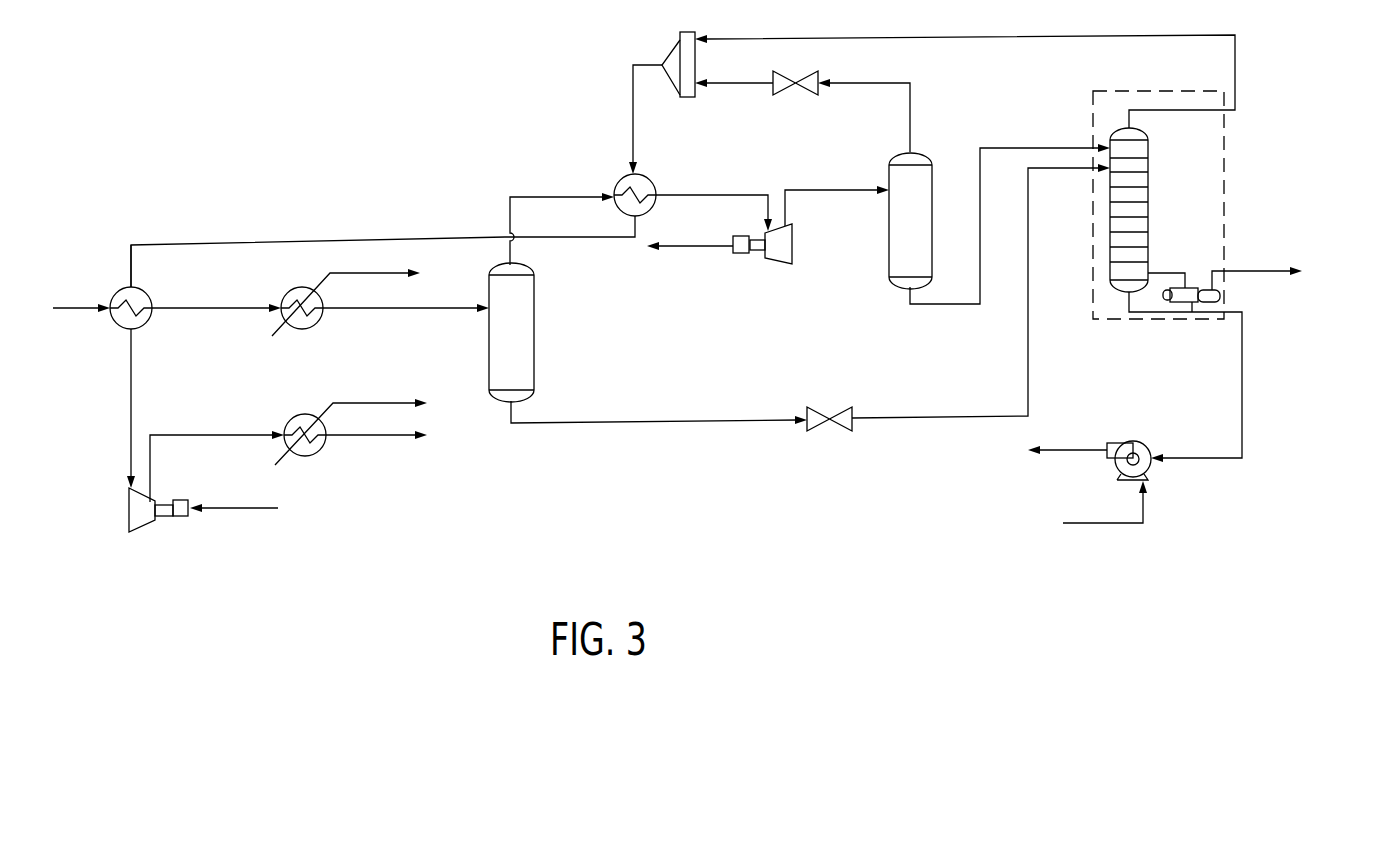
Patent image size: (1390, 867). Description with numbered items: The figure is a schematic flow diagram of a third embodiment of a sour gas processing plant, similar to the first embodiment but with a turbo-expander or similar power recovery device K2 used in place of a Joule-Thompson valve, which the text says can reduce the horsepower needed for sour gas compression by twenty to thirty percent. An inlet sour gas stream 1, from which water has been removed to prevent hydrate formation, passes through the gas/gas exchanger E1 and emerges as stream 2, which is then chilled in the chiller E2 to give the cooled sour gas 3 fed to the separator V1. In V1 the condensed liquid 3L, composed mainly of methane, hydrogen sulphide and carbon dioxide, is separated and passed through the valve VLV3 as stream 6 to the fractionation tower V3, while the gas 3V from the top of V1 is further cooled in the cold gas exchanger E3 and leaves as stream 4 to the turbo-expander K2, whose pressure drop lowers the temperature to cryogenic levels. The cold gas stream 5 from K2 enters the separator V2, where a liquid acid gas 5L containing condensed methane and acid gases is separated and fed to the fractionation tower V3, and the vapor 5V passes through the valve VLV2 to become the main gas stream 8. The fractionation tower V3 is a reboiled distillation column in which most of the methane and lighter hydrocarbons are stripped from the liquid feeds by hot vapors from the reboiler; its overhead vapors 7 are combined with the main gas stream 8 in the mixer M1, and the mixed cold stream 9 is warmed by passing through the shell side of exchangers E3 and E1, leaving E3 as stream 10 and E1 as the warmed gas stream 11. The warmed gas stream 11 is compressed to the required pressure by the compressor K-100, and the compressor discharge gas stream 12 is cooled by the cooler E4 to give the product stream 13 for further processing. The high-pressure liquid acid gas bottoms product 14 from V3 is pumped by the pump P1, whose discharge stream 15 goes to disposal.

The inlet sour gas stream 1 is at (85, 312).
The heated feed stream from exchanger E1 2 is at (230, 312).
The cooled sour gas 3 is at (422, 312).
The gas from the top of V1 3V is at (543, 202).
The condensed liquid 3L is at (684, 433).
The vapor stream from exchanger E3 to compressor K2 4 is at (724, 205).
The cold gas stream 5 is at (847, 204).
The vapor stream from separator V2 5V is at (893, 91).
The liquid acid gas 5L is at (979, 256).
The expanded liquid stream from valve VLV3 to column V3 6 is at (1029, 318).
The overhead vapors 7 is at (1011, 45).
The main gas stream 8 is at (744, 97).
The mixed cold stream 9 is at (634, 135).
The warmed vapor stream from exchanger E3 to exchanger E1 10 is at (589, 240).
The warmed gas stream 11 is at (135, 402).
The compressor discharge gas stream 12 is at (222, 440).
The cooled product stream from exchanger E4 13 is at (396, 442).
The liquid acid gas bottoms product 14 is at (1243, 405).
The pumped bottoms product stream 15 is at (1076, 453).
The gas/gas exchanger E1 is at (118, 290).
The chiller E2 is at (292, 290).
The cold gas exchanger E3 is at (620, 175).
The cooler E4 is at (296, 414).
The compressor K-100 is at (123, 530).
The turbo-expander K2 is at (792, 267).
The mixer M1 is at (673, 40).
The separator V1 is at (535, 381).
The separator V2 is at (896, 284).
The fractionation tower V3 is at (1118, 293).
The expansion valve VLV2 is at (815, 97).
The expansion valve VLV3 is at (860, 447).
The pump P1 is at (1160, 428).